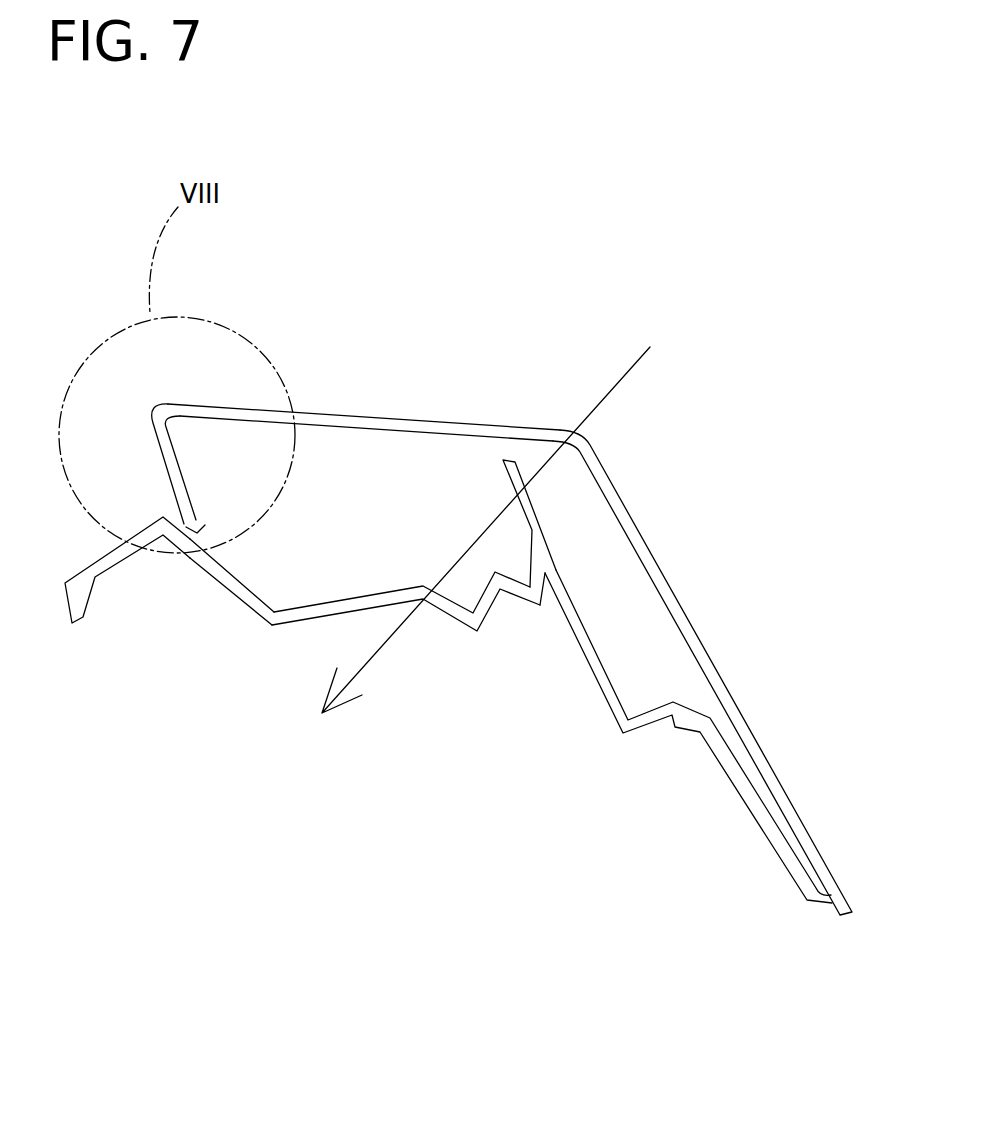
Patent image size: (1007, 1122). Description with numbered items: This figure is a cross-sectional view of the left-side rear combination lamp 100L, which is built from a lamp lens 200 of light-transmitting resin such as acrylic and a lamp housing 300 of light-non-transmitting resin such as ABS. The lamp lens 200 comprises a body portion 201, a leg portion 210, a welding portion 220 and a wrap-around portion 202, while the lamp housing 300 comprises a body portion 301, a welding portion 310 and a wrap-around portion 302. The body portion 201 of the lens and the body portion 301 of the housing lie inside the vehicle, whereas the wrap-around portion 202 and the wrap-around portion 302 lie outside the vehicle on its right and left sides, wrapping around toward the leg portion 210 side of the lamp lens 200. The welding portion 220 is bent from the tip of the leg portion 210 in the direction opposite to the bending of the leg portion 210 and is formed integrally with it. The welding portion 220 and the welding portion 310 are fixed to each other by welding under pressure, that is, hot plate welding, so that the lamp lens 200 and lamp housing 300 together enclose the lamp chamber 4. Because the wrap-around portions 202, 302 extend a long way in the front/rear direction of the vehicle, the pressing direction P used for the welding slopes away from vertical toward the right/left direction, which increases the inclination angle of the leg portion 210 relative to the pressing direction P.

The left-side rear combination lamp 100L is at (476, 329).
The lamp lens 200 is at (502, 613).
The body portion 201 is at (463, 421).
The wrap-around portion 202 is at (652, 553).
The leg portion 210 is at (183, 473).
The welding portion 220 is at (228, 577).
The lamp housing 300 is at (448, 681).
The body portion 301 is at (450, 620).
The wrap-around portion 302 is at (593, 688).
The welding portion 310 is at (201, 555).
The lamp chamber 4 is at (425, 525).
The pressing direction P is at (624, 370).